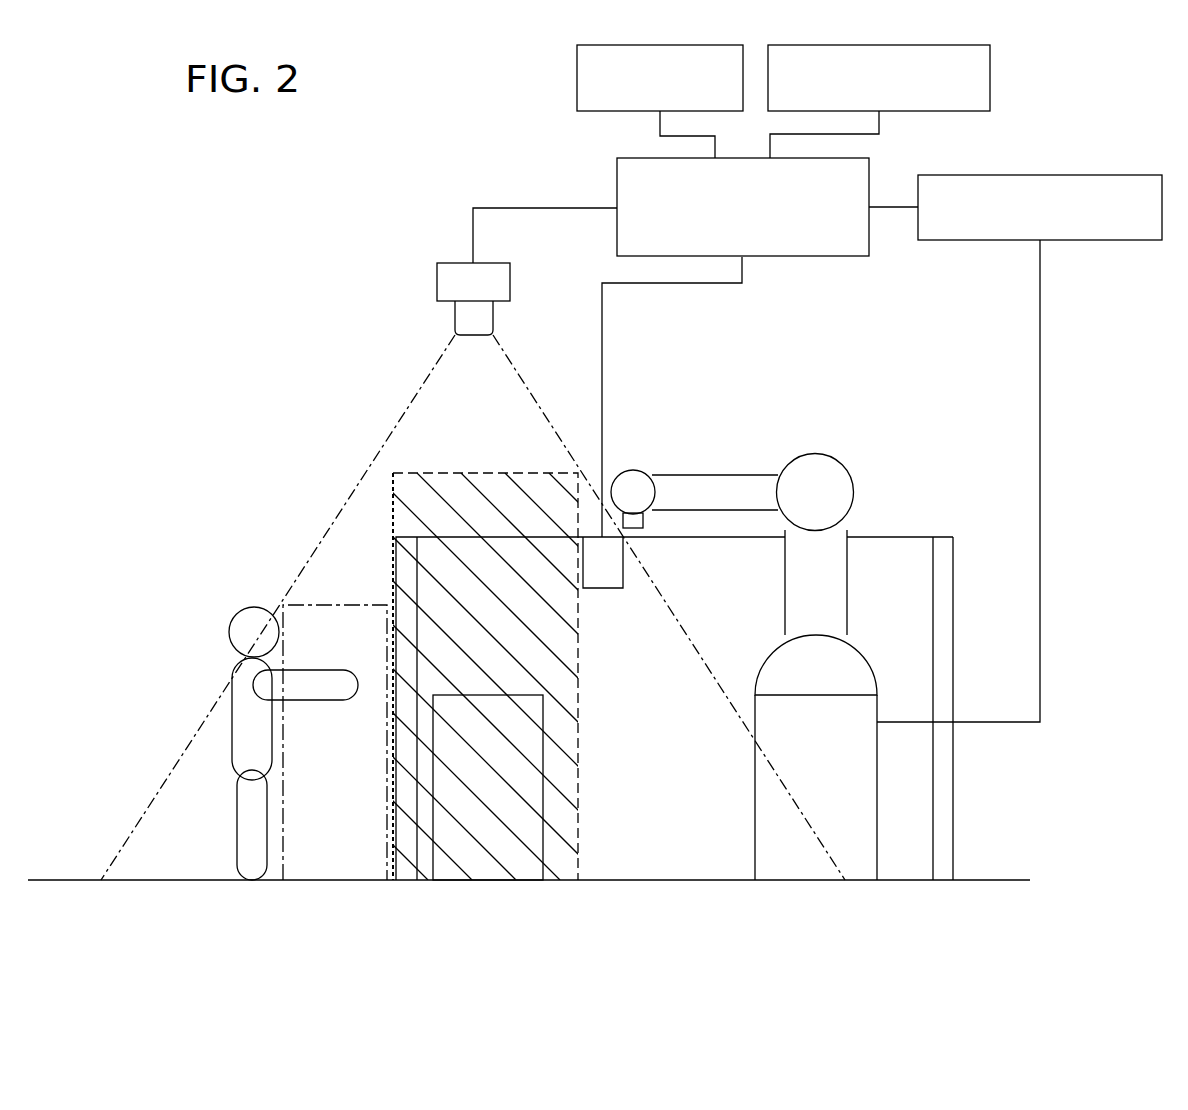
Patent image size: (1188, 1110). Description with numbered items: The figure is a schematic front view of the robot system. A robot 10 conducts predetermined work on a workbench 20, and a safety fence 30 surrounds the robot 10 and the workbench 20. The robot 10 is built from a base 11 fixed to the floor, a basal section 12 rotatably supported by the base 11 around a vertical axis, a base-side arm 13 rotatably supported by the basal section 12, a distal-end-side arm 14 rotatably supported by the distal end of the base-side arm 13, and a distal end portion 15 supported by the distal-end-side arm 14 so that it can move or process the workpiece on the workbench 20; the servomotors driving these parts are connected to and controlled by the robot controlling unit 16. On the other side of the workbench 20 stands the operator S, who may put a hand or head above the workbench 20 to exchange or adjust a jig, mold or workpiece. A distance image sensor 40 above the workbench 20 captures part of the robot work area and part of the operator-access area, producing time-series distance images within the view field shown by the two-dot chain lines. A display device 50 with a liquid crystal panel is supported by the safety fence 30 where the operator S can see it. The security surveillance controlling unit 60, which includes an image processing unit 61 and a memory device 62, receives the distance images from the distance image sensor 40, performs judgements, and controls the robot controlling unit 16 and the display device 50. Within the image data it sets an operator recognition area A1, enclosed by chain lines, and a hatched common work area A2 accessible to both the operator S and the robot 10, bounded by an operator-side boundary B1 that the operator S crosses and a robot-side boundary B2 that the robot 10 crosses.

The robot 10 is at (805, 628).
The base 11 is at (877, 815).
The basal section 12 is at (866, 658).
The base-side arm 13 is at (848, 563).
The distal-end-side arm 14 is at (708, 475).
The distal end portion 15 is at (645, 520).
The robot controlling unit 16 is at (1062, 240).
The workbench 20 is at (543, 778).
The safety fence 30 is at (953, 762).
The distance image sensor 40 is at (437, 280).
The display device 50 is at (600, 590).
The security surveillance controlling unit 60 is at (808, 257).
The image processing unit 61 is at (990, 77).
The memory device 62 is at (576, 79).
The operator S is at (232, 733).
The operator recognition area A1 is at (322, 603).
The common work area A2 is at (537, 675).
The operator-side boundary B1 is at (392, 500).
The robot-side boundary B2 is at (578, 732).